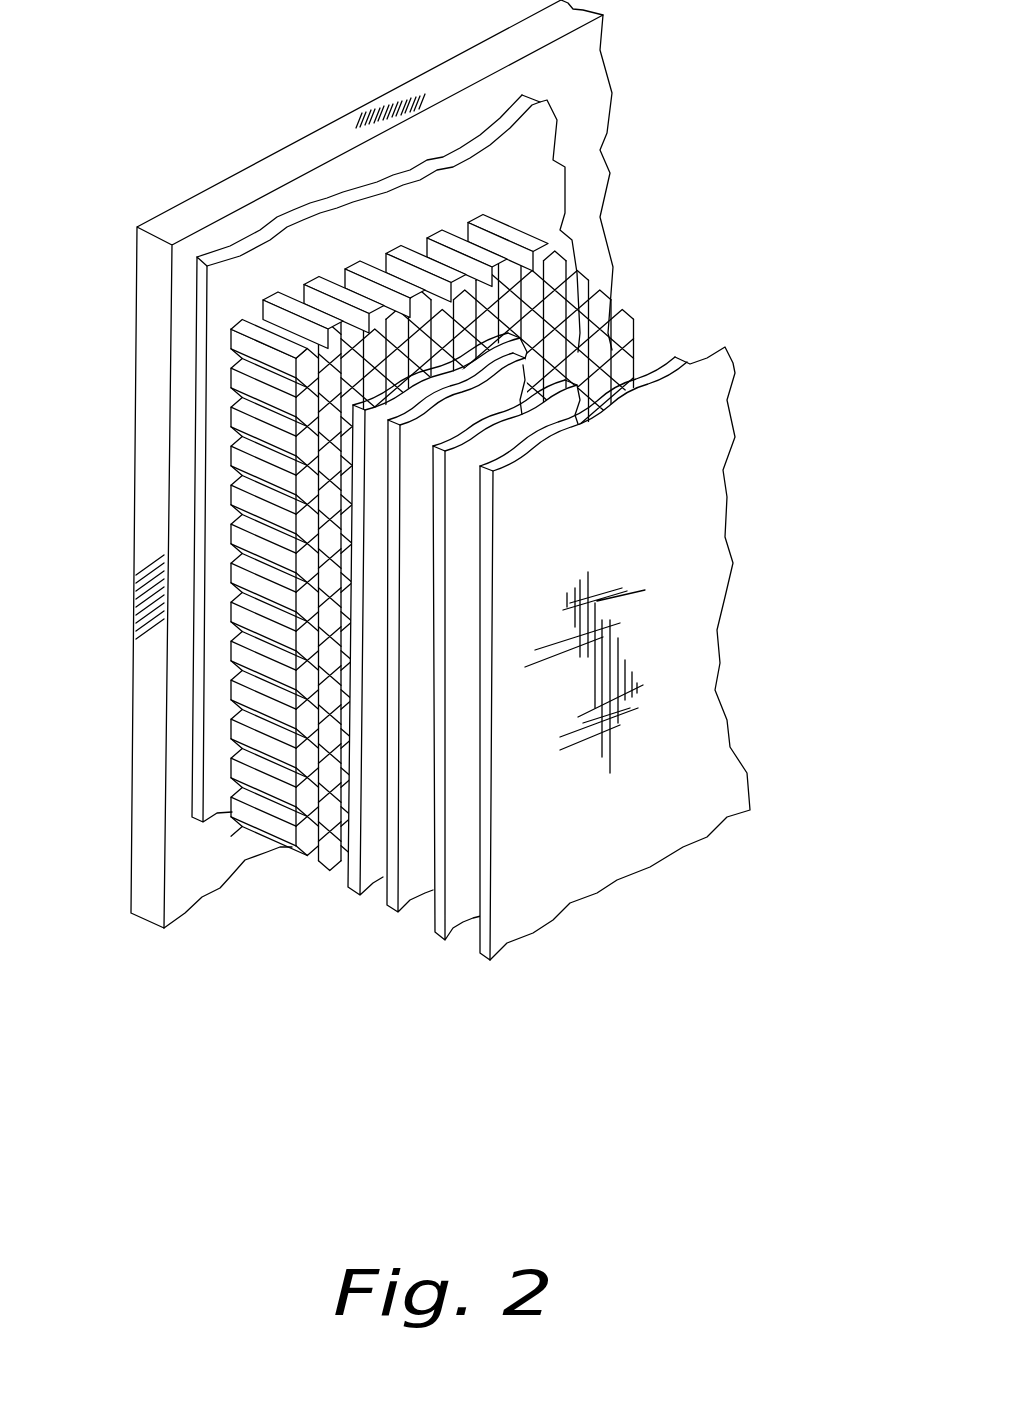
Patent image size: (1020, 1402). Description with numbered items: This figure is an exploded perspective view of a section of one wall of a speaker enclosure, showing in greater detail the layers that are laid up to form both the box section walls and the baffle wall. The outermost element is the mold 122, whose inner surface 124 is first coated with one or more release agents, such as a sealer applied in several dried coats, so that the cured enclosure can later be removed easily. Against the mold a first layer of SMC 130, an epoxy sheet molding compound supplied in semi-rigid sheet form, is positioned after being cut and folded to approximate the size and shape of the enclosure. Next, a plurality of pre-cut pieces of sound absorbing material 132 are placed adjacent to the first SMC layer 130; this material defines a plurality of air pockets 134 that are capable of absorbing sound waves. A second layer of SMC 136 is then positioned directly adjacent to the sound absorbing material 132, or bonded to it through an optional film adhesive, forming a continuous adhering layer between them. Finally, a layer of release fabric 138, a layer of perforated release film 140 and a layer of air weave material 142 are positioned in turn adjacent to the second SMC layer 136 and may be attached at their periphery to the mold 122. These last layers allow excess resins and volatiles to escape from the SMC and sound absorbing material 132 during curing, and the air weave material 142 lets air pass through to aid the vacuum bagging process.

The mold 122 is at (150, 473).
The inner surface of the mold 124 is at (192, 871).
The first layer of SMC 130 is at (235, 282).
The sound absorbing material 132 is at (512, 290).
The air pockets 134 is at (536, 300).
The second layer of SMC 136 is at (368, 868).
The release fabric 138 is at (410, 877).
The perforated release film 140 is at (457, 898).
The air weave material 142 is at (533, 908).